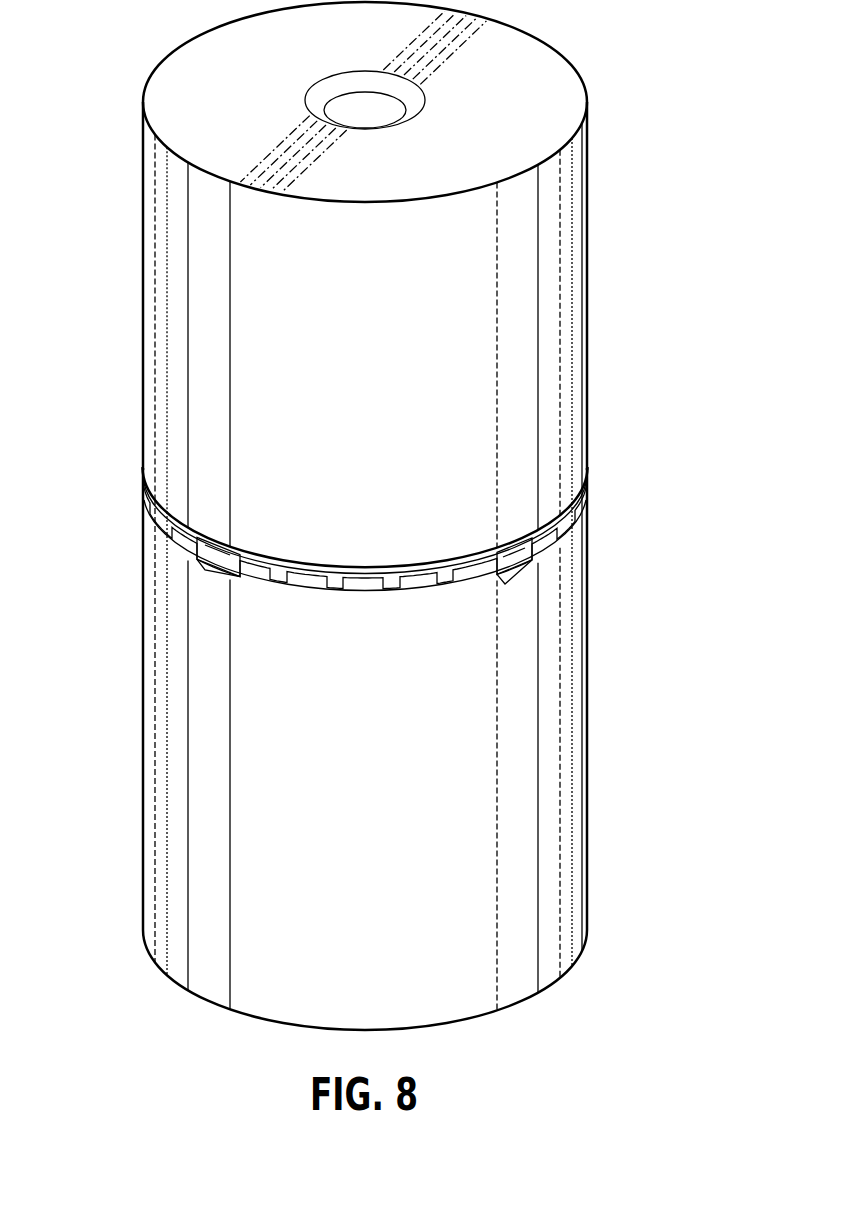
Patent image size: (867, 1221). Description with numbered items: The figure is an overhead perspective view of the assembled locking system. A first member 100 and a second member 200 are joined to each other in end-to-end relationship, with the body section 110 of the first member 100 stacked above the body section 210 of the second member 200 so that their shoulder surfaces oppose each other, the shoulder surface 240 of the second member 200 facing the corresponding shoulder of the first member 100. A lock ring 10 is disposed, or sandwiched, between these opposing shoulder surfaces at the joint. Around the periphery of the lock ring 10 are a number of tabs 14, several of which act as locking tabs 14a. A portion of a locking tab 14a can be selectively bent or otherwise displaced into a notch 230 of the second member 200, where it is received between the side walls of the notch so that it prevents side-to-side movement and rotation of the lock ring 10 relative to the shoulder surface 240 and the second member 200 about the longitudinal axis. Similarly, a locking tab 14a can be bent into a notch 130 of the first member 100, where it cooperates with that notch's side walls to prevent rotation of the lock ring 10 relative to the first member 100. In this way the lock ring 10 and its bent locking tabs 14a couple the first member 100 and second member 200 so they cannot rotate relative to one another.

The lock ring 10 is at (357, 570).
The tab 14 is at (152, 536).
The locking tab 14a is at (238, 546).
The first member 100 is at (391, 274).
The body section 110 is at (200, 286).
The notch 130 is at (455, 556).
The second member 200 is at (374, 749).
The body section 210 is at (168, 847).
The notch 230 is at (528, 578).
The shoulder surface 240 is at (423, 592).